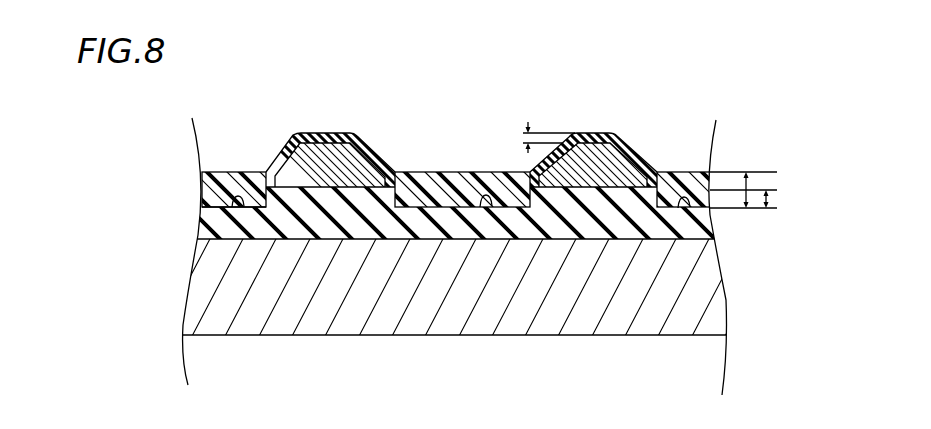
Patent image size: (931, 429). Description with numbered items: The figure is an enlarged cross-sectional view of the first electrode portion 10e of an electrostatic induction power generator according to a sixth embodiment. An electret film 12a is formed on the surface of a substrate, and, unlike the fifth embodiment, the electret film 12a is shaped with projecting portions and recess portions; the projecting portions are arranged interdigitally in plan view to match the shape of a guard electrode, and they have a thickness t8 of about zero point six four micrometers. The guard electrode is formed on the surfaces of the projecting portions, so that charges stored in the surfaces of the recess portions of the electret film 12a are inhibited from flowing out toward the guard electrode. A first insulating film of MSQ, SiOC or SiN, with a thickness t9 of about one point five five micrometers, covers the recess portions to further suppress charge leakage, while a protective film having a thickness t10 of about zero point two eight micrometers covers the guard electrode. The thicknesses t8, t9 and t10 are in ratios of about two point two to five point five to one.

The first electrode portion 10e is at (712, 88).
The electret film 12a is at (213, 215).
The thickness of the projecting portions t8 is at (755, 201).
The thickness of the first insulating film t9 is at (748, 180).
The thickness of the protective film t10 is at (527, 137).